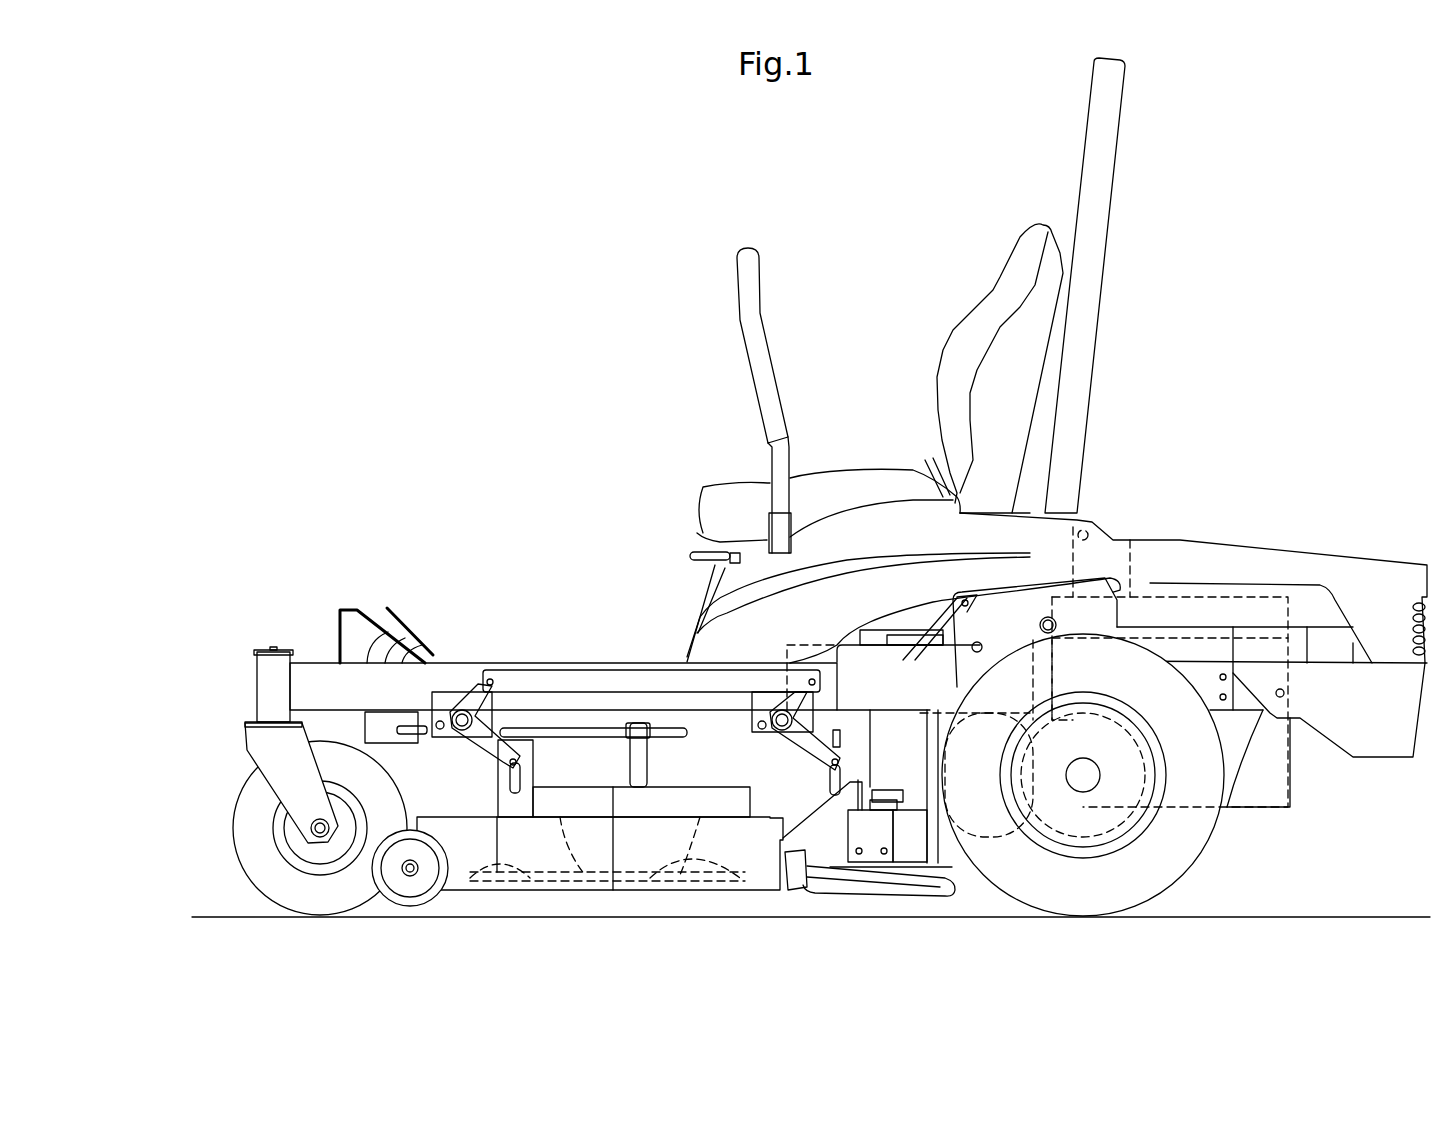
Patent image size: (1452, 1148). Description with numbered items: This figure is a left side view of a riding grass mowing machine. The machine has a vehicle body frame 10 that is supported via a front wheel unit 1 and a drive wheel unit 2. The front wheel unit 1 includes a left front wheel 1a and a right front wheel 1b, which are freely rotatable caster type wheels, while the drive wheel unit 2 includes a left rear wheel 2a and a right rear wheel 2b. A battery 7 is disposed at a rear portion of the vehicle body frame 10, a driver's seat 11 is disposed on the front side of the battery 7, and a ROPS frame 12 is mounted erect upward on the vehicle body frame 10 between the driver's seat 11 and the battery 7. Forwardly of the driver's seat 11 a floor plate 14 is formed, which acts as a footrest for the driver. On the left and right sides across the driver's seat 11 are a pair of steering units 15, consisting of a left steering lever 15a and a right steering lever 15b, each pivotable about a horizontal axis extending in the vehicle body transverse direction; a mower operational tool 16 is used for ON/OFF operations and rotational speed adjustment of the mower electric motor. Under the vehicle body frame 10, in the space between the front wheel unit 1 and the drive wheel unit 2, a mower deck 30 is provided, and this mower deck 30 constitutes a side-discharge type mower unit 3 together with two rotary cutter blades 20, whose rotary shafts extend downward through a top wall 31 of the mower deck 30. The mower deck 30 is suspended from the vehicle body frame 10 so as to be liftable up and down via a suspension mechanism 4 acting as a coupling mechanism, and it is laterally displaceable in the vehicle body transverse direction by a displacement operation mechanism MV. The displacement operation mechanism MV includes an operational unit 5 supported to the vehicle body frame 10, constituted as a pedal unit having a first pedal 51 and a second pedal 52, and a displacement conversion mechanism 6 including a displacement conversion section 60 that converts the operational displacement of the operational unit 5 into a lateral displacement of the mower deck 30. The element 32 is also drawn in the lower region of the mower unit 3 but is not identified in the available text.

The front wheel unit 1 is at (240, 837).
The left front wheel 1a is at (272, 818).
The right front wheel 1b is at (272, 818).
The drive wheel unit 2 is at (1205, 830).
The left rear wheel 2a is at (1123, 775).
The right rear wheel 2b is at (1123, 775).
The mower unit 3 is at (686, 833).
The suspension mechanism 4 is at (480, 757).
The operational unit 5 is at (622, 757).
The displacement conversion mechanism 6 is at (434, 582).
The battery 7 is at (1283, 792).
The vehicle body frame 10 is at (327, 680).
The driver's seat 11 is at (953, 338).
The ROPS frame 12 is at (1112, 152).
The floor plate 14 is at (538, 663).
The steering units 15 is at (742, 298).
The left steering lever 15a is at (663, 400).
The right steering lever 15b is at (663, 400).
The mower operational tool 16 is at (410, 607).
The rotary cutter blades 20 is at (705, 845).
The mower deck 30 is at (663, 817).
The top wall 31 is at (452, 807).
The cutting blade 32 is at (752, 878).
The first pedal 51 is at (453, 603).
The second pedal 52 is at (432, 630).
The displacement conversion section 60 is at (385, 718).
The displacement operation mechanism MV is at (597, 720).